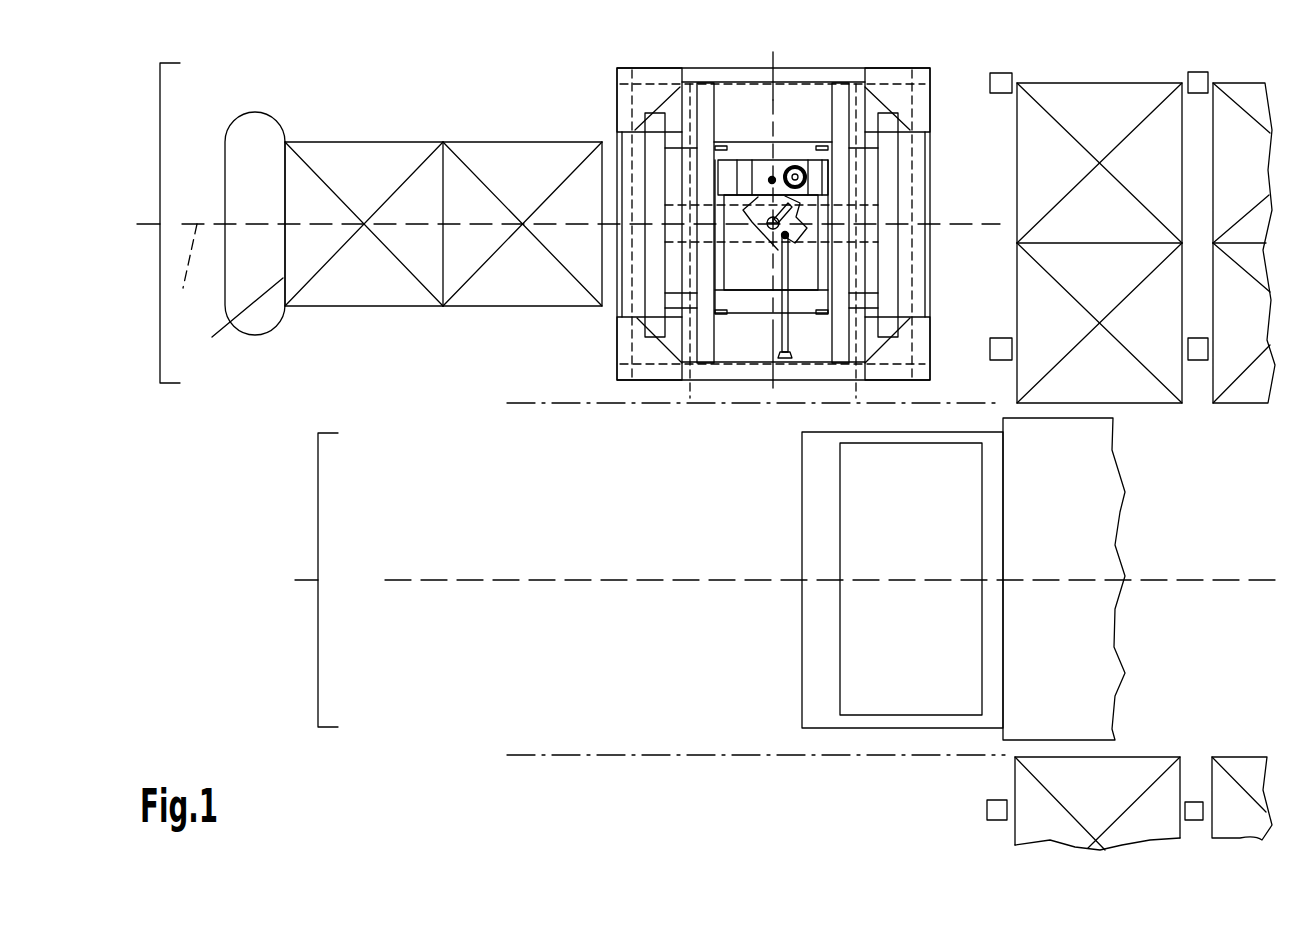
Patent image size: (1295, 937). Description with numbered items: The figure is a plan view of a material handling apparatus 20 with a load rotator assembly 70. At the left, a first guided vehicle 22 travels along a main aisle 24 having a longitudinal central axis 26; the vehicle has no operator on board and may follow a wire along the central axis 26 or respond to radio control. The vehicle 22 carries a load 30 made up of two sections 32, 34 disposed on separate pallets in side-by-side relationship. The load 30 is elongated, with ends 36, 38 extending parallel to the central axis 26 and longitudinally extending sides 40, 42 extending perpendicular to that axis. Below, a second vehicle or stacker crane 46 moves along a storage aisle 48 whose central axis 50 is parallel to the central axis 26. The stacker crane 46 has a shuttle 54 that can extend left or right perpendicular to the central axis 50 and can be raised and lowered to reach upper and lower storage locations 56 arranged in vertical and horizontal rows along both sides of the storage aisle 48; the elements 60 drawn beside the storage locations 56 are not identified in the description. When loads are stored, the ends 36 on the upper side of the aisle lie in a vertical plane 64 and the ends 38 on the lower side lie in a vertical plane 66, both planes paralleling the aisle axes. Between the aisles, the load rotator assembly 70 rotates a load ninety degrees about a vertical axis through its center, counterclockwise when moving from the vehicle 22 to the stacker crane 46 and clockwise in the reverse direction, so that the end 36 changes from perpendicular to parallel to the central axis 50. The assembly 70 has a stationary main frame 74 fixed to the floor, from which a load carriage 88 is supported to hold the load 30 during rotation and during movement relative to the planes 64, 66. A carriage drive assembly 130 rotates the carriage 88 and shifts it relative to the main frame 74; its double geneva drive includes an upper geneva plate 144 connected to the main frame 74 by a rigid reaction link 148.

The material handling apparatus 20 is at (249, 465).
The first guided vehicle 22 is at (235, 102).
The main aisle 24 is at (554, 224).
The central axis of the main aisle 26 is at (187, 269).
The load 30 is at (272, 181).
The load section 32 is at (373, 287).
The load section 34 is at (517, 282).
The end of the load 36 is at (1181, 434).
The end of the load 38 is at (602, 268).
The side of the load 40 is at (400, 142).
The side of the load 42 is at (480, 306).
The stacker crane 46 is at (1135, 506).
The storage aisle 48 is at (303, 580).
The central axis of the storage aisle 50 is at (537, 580).
The shuttle 54 is at (875, 537).
The storage locations 56 is at (1255, 83).
The spacer block 60 is at (1003, 80).
The vertical plane 64 is at (588, 404).
The vertical plane 66 is at (590, 755).
The load rotator assembly 70 is at (782, 46).
The main frame 74 is at (887, 78).
The load carriage 88 is at (680, 133).
The carriage drive assembly 130 is at (791, 151).
The upper geneva plate 144 is at (762, 216).
The reaction link 148 is at (782, 328).